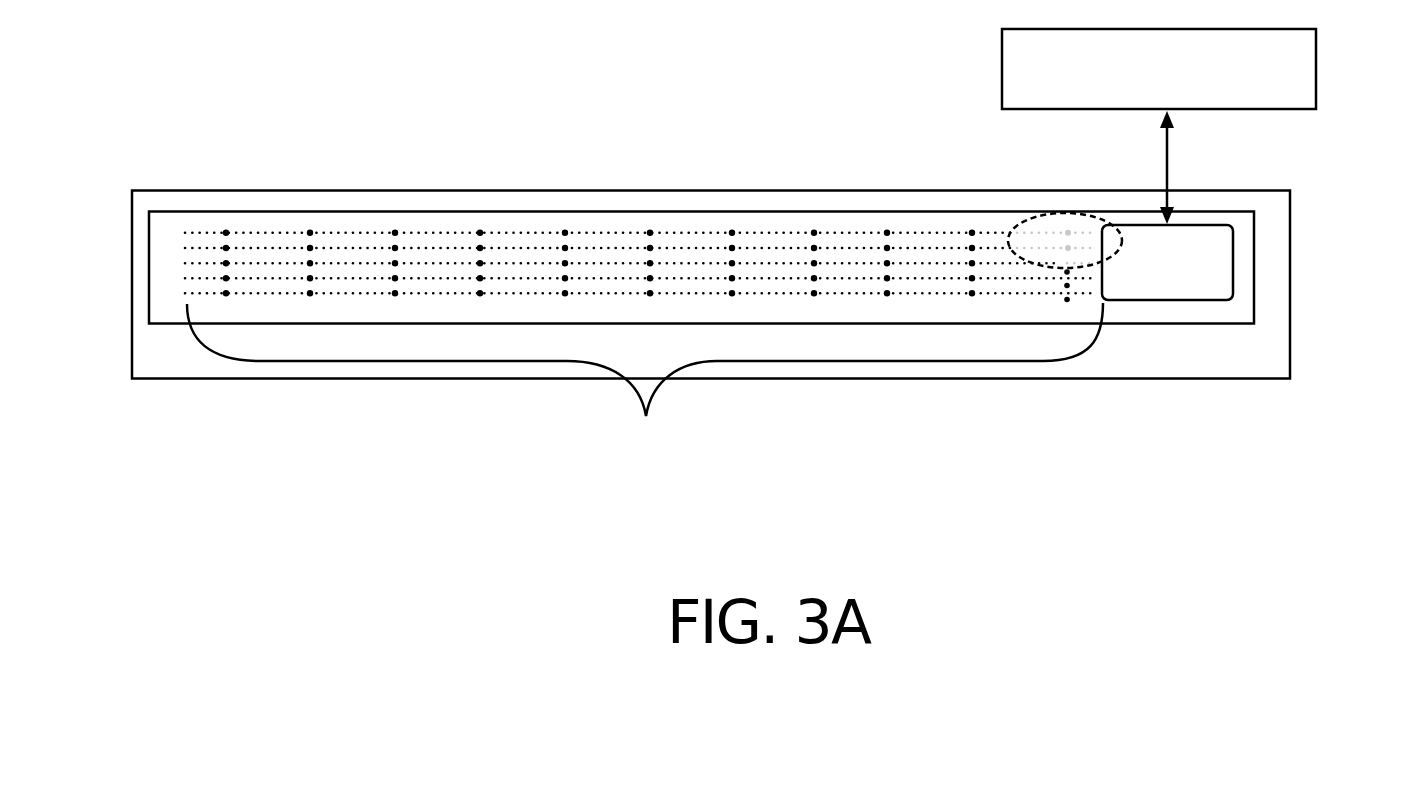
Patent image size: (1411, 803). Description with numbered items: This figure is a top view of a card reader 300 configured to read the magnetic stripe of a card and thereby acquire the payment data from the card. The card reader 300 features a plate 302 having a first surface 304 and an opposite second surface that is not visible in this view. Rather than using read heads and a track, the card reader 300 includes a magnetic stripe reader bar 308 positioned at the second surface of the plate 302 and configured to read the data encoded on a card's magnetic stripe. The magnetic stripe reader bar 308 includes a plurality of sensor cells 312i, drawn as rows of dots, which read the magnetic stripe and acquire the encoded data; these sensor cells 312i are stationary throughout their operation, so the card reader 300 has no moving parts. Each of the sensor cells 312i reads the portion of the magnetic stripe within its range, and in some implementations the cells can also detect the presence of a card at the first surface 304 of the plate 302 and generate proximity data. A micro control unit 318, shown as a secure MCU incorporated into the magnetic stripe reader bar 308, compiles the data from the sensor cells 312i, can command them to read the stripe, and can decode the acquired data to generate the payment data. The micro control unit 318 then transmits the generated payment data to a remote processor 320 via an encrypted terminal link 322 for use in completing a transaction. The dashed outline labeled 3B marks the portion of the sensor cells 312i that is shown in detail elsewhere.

The card reader 300 is at (112, 167).
The plate 302 is at (197, 378).
The first surface 304 is at (161, 357).
The magnetic stripe reader bar 308 is at (172, 264).
The sensor cells 312i is at (645, 375).
The micro control unit 318 is at (1233, 300).
The remote processor 320 is at (1159, 69).
The encrypted terminal link 322 is at (1297, 168).
The detail region shown in FIG. 3B is at (1063, 268).